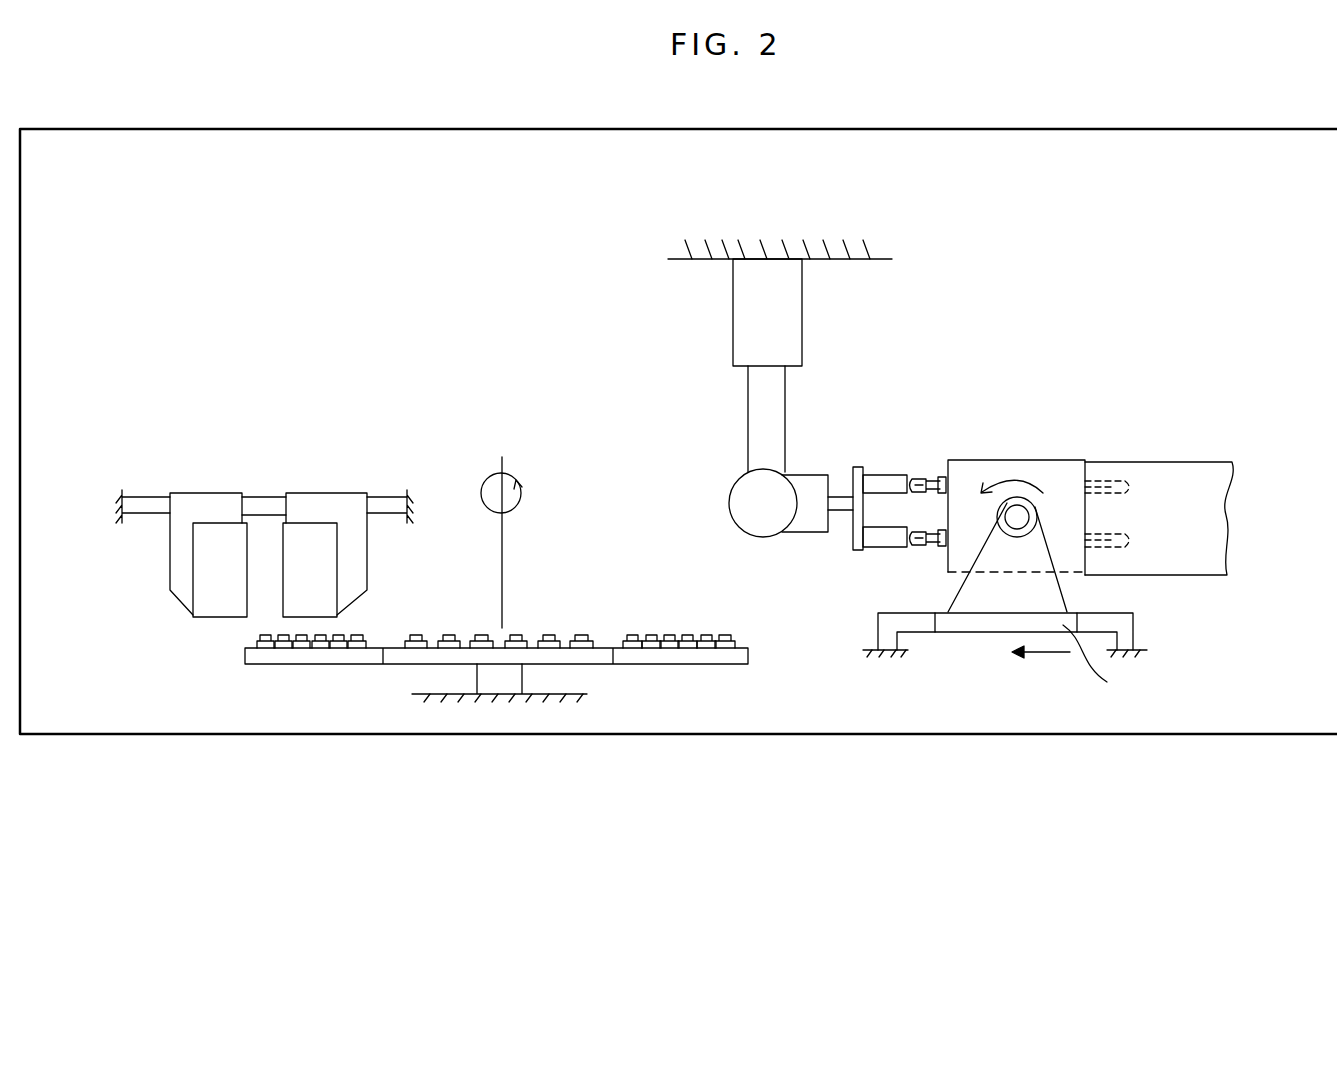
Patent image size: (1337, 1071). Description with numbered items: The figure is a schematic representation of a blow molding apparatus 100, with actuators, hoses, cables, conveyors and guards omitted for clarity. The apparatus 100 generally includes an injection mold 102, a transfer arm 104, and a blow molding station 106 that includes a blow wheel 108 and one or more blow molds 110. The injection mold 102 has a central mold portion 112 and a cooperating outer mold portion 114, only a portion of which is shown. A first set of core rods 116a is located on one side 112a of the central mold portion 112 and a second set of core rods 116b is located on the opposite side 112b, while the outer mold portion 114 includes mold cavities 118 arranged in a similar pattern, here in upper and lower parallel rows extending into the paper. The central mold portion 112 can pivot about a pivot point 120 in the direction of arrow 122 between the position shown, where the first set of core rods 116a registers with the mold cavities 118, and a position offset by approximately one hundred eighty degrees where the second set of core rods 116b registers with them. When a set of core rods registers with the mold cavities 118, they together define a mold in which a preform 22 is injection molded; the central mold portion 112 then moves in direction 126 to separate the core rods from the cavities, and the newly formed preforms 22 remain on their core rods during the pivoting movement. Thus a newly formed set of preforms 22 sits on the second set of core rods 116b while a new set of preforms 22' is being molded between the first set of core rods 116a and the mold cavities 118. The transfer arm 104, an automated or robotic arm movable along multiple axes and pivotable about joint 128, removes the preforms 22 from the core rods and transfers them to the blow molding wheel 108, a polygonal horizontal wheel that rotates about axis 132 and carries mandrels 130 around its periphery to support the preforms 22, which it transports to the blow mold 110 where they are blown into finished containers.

The blow molding apparatus 100 is at (978, 750).
The injection mold 102 is at (1055, 444).
The transfer arm 104 is at (727, 426).
The blow molding station 106 is at (538, 524).
The blow molding wheel 108 is at (648, 672).
The blow mold 110 is at (350, 473).
The central mold portion 112 is at (975, 466).
The one side of the central mold portion 112a is at (1092, 567).
The opposite side of the central mold portion 112b is at (943, 483).
The outer mold portion 114 is at (1162, 475).
The first set of core rods 116a is at (1122, 487).
The second set of core rods 116b is at (915, 475).
The mold cavities 118 is at (1133, 487).
The pivot point 120 is at (1017, 520).
The arrow 122 is at (1017, 473).
The direction 126 is at (1045, 655).
The joint 128 is at (773, 537).
The mandrels 130 is at (583, 637).
The axis 132 is at (503, 582).
The preform 22 is at (906, 488).
The new set of preforms 22' is at (1173, 510).